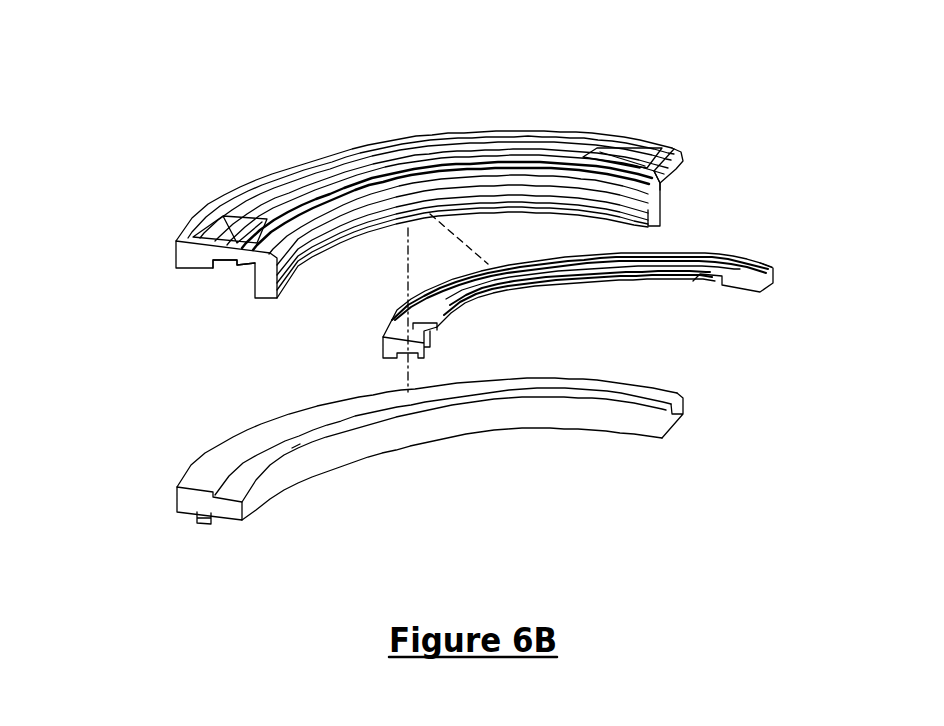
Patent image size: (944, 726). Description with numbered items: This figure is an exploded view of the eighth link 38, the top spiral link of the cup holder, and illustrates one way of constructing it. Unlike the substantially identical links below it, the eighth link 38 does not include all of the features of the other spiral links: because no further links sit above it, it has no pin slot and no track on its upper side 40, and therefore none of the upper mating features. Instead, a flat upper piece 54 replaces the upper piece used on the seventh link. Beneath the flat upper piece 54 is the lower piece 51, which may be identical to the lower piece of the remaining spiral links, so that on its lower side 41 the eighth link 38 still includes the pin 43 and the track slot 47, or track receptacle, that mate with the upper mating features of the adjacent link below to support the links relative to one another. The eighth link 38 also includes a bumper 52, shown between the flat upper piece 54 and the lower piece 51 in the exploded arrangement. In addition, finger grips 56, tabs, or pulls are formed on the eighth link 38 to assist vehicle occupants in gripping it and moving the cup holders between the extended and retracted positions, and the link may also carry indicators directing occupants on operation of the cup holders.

The eighth link 38 is at (736, 59).
The upper side 40 is at (428, 163).
The lower side 41 is at (665, 432).
The pin 43 is at (204, 524).
The track slot 47 is at (661, 185).
The lower piece 51 is at (190, 495).
The bumper 52 is at (546, 288).
The flat upper piece 54 is at (190, 258).
The finger grips 56 is at (232, 228).